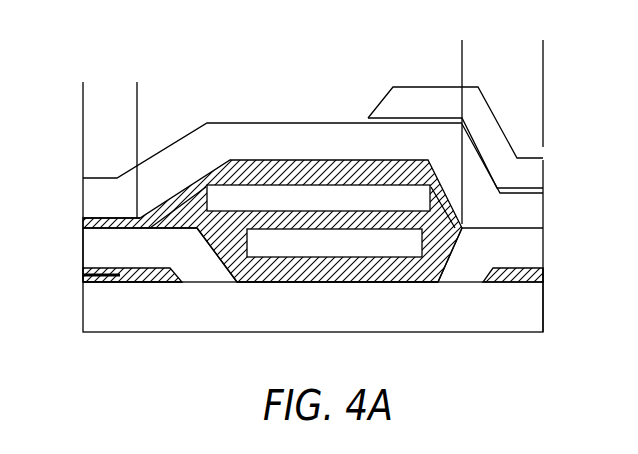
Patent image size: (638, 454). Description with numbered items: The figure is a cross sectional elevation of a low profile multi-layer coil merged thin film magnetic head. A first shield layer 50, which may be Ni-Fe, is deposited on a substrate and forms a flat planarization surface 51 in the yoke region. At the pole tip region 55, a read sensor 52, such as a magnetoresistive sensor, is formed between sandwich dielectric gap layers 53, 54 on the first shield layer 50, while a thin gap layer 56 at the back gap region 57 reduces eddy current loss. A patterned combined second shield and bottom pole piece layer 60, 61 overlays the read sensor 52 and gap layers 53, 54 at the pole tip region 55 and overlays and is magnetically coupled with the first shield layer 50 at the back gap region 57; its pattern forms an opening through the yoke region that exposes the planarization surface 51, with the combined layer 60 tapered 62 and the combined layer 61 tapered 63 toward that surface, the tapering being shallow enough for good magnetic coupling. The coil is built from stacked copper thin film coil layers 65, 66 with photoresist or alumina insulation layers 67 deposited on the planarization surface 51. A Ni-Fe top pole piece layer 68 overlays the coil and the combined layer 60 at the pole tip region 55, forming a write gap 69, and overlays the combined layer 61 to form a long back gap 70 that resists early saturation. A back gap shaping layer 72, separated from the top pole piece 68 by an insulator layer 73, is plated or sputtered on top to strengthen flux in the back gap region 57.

The first shield layer 50 is at (507, 333).
The planarization surface 51 is at (343, 281).
The read sensor 52 is at (83, 276).
The dielectric gap layer 53 is at (83, 282).
The dielectric gap layer 54 is at (83, 270).
The pole tip region 55 is at (137, 86).
The thin gap layer 56 is at (545, 277).
The back gap region 57 is at (543, 44).
The combined second shield and bottom pole piece layer 60 is at (83, 249).
The combined second shield and bottom pole piece layer 61 is at (543, 252).
The taper 62 is at (228, 266).
The taper 63 is at (437, 268).
The thin film coil layer 65 is at (377, 250).
The thin film coil layer 66 is at (307, 196).
The insulation layer 67 is at (272, 160).
The top pole piece layer 68 is at (232, 123).
The write gap 69 is at (83, 219).
The back gap 70 is at (543, 221).
The back gap shaping layer 72 is at (413, 87).
The insulator layer 73 is at (543, 192).